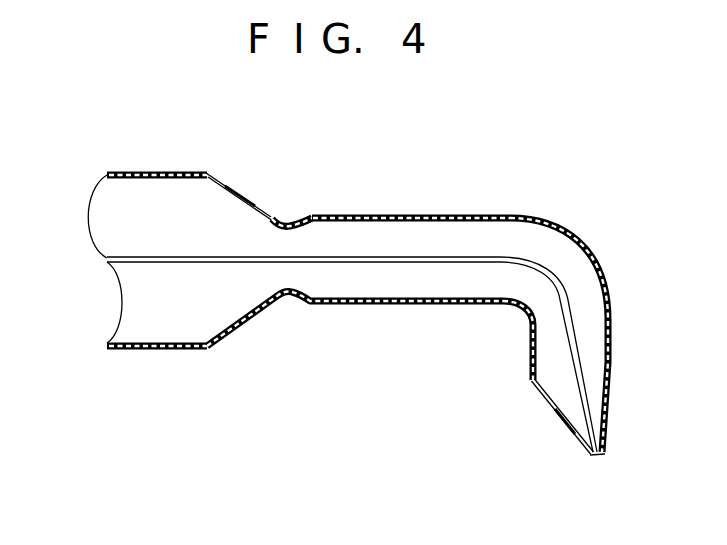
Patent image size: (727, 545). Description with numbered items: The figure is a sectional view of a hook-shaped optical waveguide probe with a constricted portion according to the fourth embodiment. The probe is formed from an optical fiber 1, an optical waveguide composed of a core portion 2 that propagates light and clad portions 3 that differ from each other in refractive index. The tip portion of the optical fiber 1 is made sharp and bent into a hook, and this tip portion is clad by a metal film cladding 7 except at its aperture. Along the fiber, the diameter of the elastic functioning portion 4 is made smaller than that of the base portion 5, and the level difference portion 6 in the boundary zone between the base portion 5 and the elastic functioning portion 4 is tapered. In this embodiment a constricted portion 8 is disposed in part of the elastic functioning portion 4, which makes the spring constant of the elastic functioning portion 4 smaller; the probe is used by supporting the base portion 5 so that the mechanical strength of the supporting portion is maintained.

The optical fiber 1 is at (357, 278).
The core portion 2 is at (208, 260).
The clad portions 3 is at (68, 185).
The elastic functioning portion 4 is at (505, 323).
The base portion 5 is at (116, 145).
The level difference portion 6 is at (215, 145).
The metal film cladding 7 is at (562, 232).
The constricted portion 8 is at (268, 145).